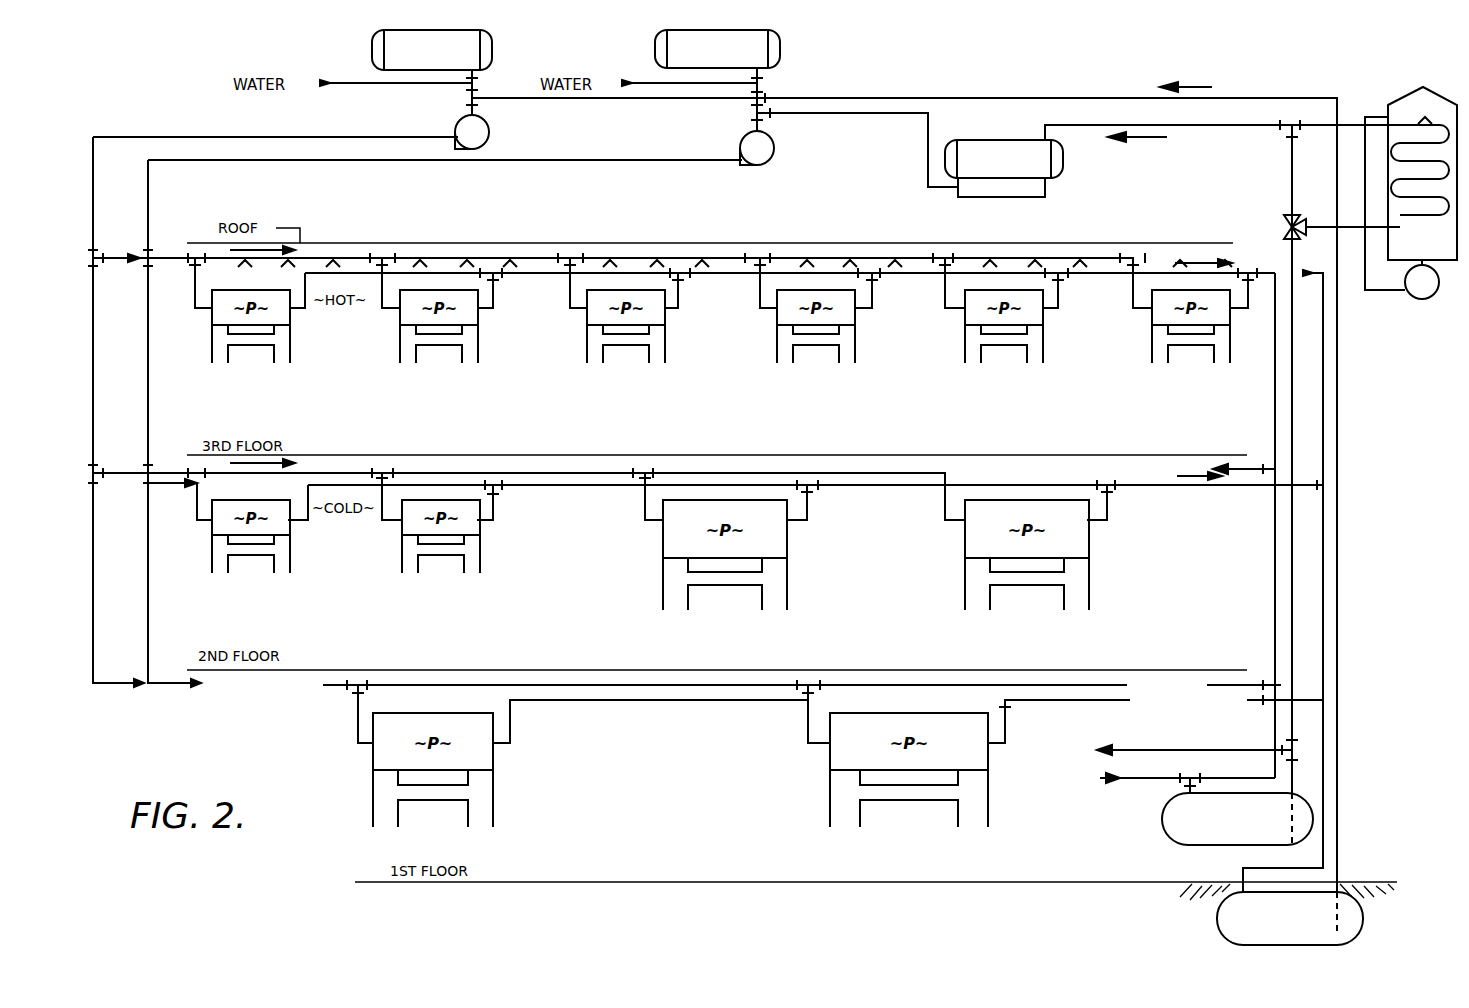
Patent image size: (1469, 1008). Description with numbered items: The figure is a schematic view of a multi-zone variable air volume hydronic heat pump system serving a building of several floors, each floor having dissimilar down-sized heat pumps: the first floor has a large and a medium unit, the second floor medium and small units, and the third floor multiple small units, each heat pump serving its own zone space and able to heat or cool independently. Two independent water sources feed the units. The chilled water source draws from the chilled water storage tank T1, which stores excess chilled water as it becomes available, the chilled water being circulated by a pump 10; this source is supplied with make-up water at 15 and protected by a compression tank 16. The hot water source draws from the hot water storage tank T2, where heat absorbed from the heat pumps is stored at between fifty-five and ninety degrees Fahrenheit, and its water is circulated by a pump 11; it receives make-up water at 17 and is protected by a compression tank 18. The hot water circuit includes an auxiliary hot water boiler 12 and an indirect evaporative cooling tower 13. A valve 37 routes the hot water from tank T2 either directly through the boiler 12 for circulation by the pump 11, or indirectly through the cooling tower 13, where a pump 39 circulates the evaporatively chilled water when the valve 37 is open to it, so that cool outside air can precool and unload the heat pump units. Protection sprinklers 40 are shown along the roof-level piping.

The pump 10 is at (489, 134).
The pump 11 is at (774, 150).
The auxiliary hot water boiler 12 is at (1063, 160).
The cooling tower 13 is at (1415, 92).
The make-up water 15 is at (362, 85).
The compression tank 16 is at (492, 50).
The make-up water 17 is at (645, 82).
The compression tank 18 is at (780, 50).
The valve 37 is at (1284, 226).
The pump 39 is at (1422, 292).
The protection sprinklers 40 is at (295, 262).
The chilled water storage tank T1 is at (1212, 922).
The hot water storage tank T2 is at (1158, 813).